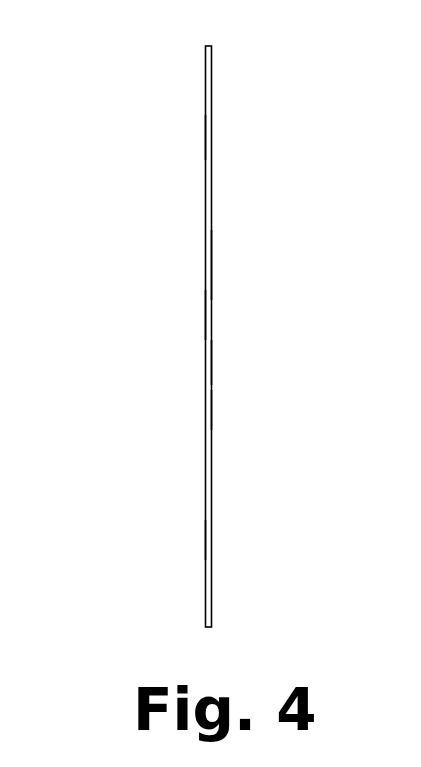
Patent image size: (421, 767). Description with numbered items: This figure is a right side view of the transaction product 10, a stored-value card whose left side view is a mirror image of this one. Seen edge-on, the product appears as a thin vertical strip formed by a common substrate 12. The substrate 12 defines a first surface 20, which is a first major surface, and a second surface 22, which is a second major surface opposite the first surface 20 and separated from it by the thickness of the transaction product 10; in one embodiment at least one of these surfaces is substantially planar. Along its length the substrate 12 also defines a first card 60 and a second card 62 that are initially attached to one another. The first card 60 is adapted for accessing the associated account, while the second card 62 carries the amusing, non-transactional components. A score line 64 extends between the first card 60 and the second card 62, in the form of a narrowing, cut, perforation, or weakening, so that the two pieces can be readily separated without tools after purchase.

The transaction product 10 is at (157, 70).
The substrate 12 is at (212, 266).
The first surface 20 is at (205, 316).
The second surface 22 is at (212, 361).
The first card 60 is at (213, 540).
The second card 62 is at (213, 137).
The score line 64 is at (212, 406).